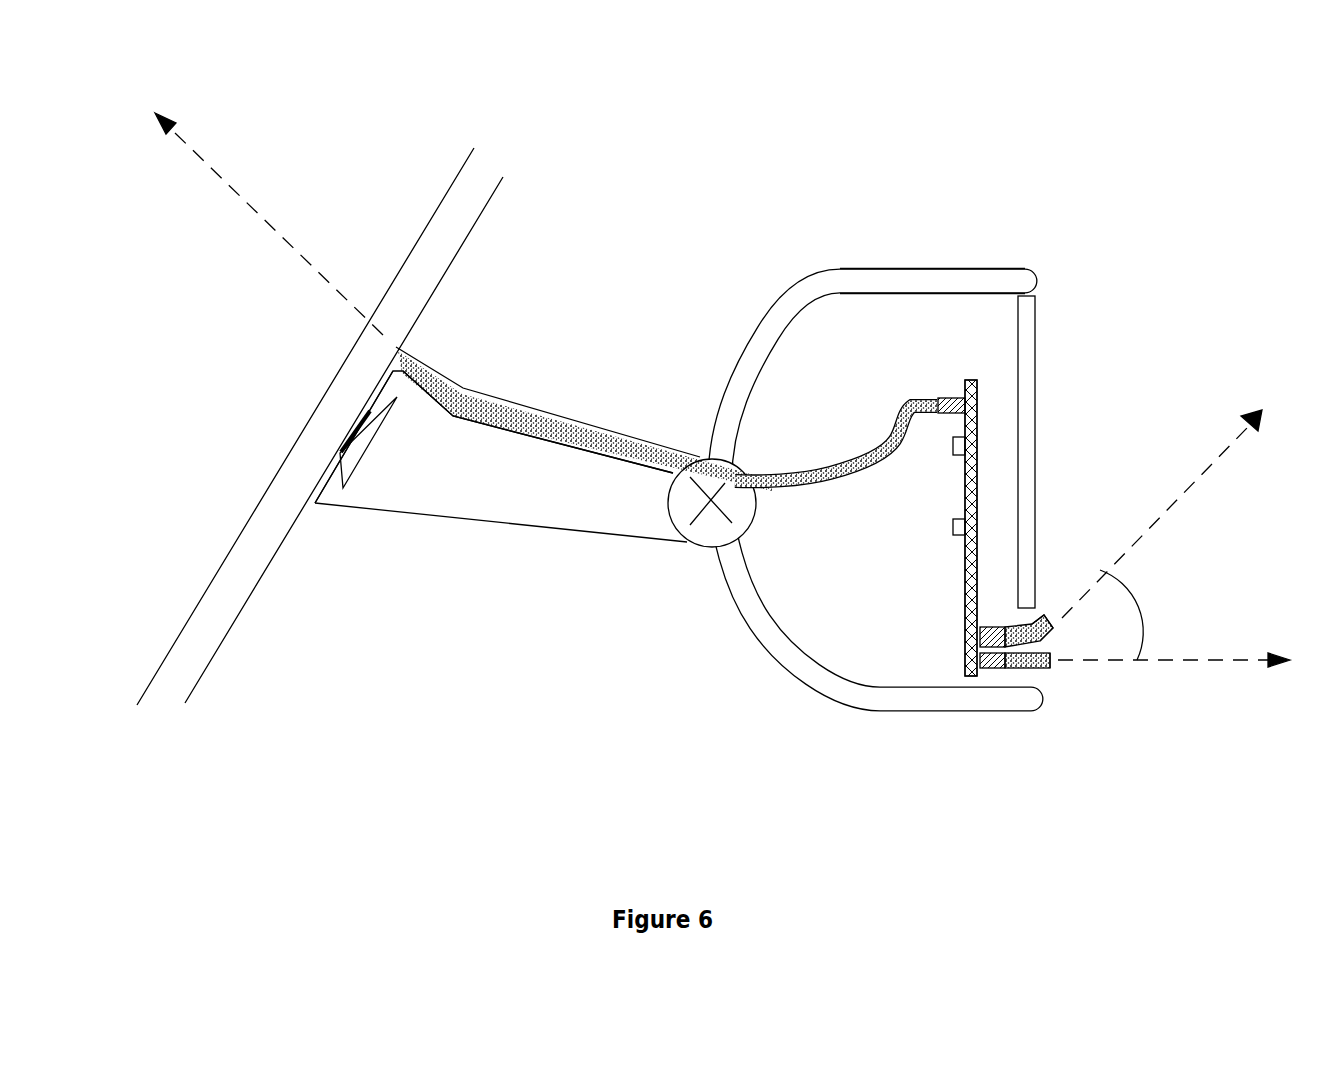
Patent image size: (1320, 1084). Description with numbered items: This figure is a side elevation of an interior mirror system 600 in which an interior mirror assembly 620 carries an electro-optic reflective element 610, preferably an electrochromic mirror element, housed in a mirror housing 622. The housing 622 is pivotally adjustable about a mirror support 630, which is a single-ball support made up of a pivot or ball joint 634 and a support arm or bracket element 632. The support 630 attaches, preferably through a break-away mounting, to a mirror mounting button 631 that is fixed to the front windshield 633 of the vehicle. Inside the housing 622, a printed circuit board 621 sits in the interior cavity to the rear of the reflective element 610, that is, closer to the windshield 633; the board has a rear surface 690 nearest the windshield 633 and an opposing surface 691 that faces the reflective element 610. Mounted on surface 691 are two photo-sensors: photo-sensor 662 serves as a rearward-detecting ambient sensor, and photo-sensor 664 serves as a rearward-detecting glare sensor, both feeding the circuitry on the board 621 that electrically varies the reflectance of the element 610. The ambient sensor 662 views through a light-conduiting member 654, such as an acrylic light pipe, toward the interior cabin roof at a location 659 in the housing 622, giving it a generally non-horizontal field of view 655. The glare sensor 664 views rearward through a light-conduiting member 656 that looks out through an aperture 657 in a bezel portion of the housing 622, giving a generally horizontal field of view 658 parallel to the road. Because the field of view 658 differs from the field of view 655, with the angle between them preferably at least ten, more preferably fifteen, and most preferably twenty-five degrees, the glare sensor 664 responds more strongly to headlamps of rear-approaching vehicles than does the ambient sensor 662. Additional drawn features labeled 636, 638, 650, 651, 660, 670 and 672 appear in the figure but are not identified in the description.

The interior mirror system 600 is at (331, 766).
The electro-optic reflective element 610 is at (1028, 348).
The interior mirror assembly 620 is at (890, 419).
The printed circuit board 621 is at (977, 483).
The mirror housing 622 is at (837, 273).
The mirror support 630 is at (501, 496).
The mirror mounting button 631 is at (368, 427).
The support arm 632 is at (595, 510).
The front windshield 633 is at (282, 498).
The ball joint 634 is at (713, 525).
The housing bottom wall 636 is at (497, 527).
The housing side wall 638 is at (387, 483).
The fluid conduit 650 is at (584, 477).
The spray direction 651 is at (261, 203).
The light-conduiting member 654 is at (1059, 598).
The field of view 655 is at (1171, 500).
The light-conduiting member 656 is at (1088, 706).
The aperture 657 is at (1053, 668).
The field of view 658 is at (1192, 658).
The location 659 is at (1045, 622).
The fluid line 660 is at (963, 397).
The photo-sensor 662 is at (995, 628).
The photo-sensor 664 is at (992, 670).
The fastener 670 is at (953, 448).
The fastener 672 is at (955, 530).
The rear surface 690 is at (990, 393).
The opposing surface 691 is at (1046, 517).